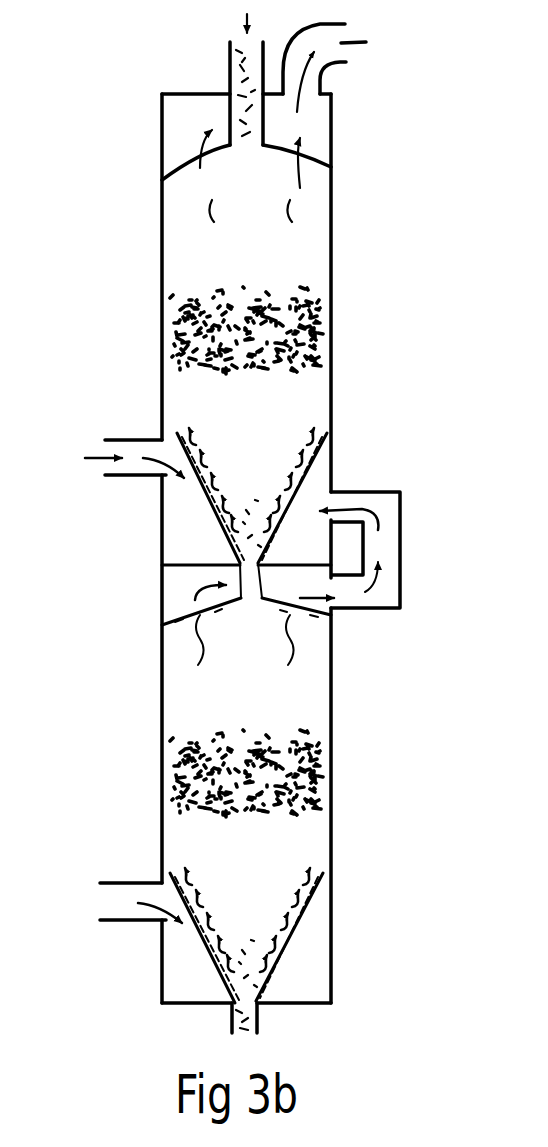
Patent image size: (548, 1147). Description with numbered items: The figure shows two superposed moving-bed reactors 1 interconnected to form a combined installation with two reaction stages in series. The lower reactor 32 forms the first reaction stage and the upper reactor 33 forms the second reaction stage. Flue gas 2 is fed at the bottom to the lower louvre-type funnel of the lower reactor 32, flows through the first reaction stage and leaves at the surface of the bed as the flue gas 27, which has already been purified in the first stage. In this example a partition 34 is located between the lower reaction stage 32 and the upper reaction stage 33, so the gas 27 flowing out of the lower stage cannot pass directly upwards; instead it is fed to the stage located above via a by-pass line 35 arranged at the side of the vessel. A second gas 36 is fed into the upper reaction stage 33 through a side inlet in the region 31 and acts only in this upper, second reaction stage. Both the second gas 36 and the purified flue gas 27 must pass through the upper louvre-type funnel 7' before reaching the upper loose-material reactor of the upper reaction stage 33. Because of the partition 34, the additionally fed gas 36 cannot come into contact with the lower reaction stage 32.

The moving-bed reactor 1 is at (340, 304).
The flue gas 2 is at (104, 905).
The upper louvre-type funnel 7' is at (311, 513).
The flue gas flowing out 27 is at (382, 516).
The upper reactor section 31 is at (100, 407).
The lower reactor 32 is at (247, 717).
The upper reactor 33 is at (257, 275).
The partition 34 is at (180, 565).
The by-pass line 35 is at (375, 546).
The second gas 36 is at (118, 464).